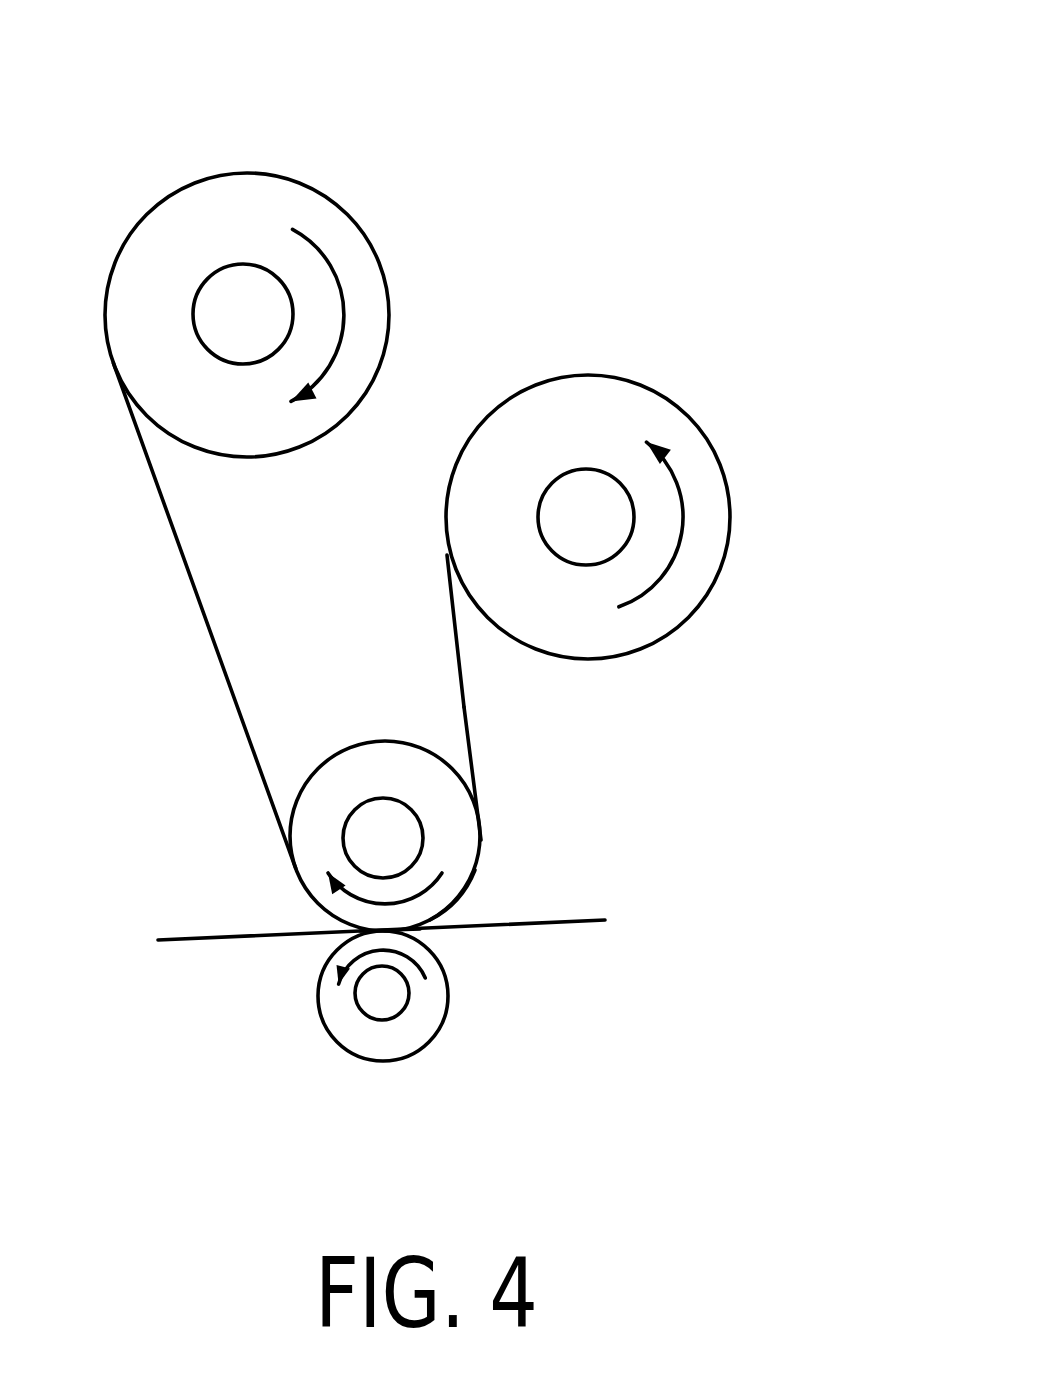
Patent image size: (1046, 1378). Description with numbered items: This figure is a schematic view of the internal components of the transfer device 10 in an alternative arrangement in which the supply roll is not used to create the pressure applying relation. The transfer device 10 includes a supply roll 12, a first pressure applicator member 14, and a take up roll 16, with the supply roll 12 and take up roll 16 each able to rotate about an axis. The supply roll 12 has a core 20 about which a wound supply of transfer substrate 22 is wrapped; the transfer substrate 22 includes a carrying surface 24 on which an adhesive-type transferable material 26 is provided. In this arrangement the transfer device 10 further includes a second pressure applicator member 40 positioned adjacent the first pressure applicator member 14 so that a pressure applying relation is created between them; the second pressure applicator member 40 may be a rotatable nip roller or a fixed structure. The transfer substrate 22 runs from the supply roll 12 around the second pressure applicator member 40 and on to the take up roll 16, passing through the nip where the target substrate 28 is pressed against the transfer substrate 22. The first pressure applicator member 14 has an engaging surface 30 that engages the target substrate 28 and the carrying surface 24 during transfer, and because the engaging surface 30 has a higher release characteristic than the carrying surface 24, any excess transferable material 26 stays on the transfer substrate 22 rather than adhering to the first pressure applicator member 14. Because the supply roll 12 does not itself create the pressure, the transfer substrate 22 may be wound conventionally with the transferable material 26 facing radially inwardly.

The transfer device 10 is at (662, 173).
The supply roll 12 is at (640, 415).
The pressure applicator member 14 is at (393, 1037).
The take up roll 16 is at (273, 192).
The core 20 is at (587, 497).
The transfer substrate 22 is at (465, 707).
The carrying surface 24 is at (483, 847).
The transferable material 26 is at (457, 900).
The target substrate 28 is at (590, 922).
The engaging surface 30 is at (407, 933).
The second pressure applicator member 40 is at (320, 812).